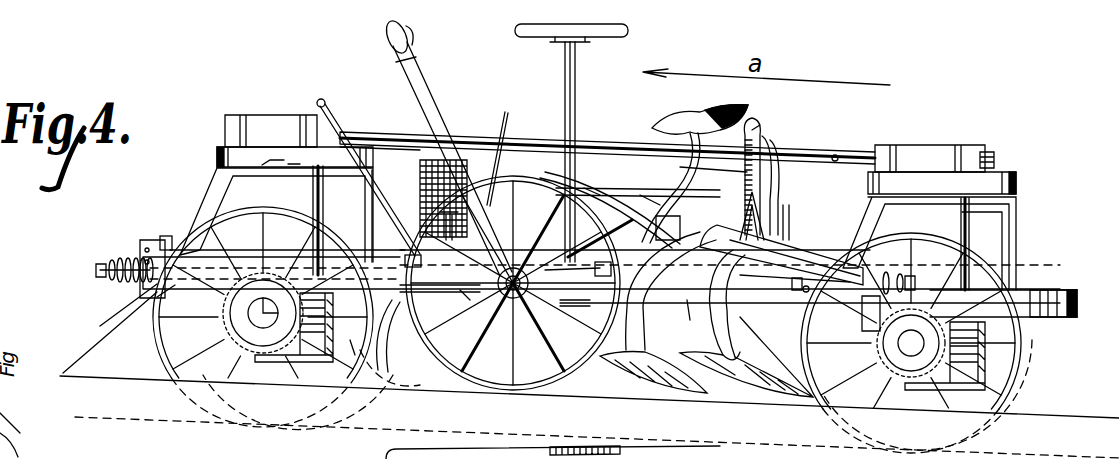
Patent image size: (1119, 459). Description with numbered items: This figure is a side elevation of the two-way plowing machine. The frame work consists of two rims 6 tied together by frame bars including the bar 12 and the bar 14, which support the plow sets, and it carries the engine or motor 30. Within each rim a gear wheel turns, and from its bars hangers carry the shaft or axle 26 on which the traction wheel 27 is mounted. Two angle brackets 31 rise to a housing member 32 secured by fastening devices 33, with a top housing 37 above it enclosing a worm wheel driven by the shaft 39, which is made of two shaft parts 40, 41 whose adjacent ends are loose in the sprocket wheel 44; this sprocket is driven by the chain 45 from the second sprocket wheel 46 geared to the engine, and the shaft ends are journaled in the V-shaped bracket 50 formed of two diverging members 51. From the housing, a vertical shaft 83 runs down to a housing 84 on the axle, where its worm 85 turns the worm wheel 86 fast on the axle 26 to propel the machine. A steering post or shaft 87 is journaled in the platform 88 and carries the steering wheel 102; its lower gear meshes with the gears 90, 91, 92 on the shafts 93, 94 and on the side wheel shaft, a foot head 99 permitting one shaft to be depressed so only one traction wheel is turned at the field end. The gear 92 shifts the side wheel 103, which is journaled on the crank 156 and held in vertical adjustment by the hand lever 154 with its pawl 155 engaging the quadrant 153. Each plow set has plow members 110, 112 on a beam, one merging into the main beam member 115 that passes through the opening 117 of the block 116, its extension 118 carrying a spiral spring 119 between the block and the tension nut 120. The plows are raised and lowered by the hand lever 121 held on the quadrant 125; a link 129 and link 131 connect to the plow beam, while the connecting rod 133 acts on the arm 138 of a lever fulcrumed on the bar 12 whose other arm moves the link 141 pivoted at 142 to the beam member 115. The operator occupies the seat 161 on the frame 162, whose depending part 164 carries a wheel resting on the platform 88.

The rim 6 is at (1068, 318).
The bar 12 is at (247, 262).
The bar 14 is at (935, 314).
The shaft or axle 26 is at (250, 316).
The traction wheel 27 is at (186, 393).
The engine or motor 30 is at (645, 199).
The angle bracket 31 is at (262, 181).
The housing member 32 is at (247, 147).
The fastening devices 33 is at (289, 160).
The top housing 37 is at (262, 117).
The shaft 39 is at (607, 141).
The shaft part 40 is at (413, 137).
The shaft part 41 is at (836, 156).
The sprocket wheel 44 is at (768, 132).
The chain 45 is at (779, 187).
The second sprocket wheel 46 is at (787, 237).
The V-shaped bracket 50 is at (770, 141).
The bracket member 51 is at (754, 218).
The vertical shaft 83 is at (324, 210).
The housing 84 is at (200, 341).
The worm 85 is at (297, 363).
The worm wheel 86 is at (240, 339).
The steering post or shaft 87 is at (577, 67).
The platform 88 is at (650, 236).
The gear 90 is at (610, 277).
The gear 91 is at (518, 312).
The gear 92 is at (560, 281).
The shaft 93 is at (688, 312).
The shaft 94 is at (419, 263).
The head 99 is at (660, 232).
The steering wheel 102 is at (629, 32).
The side wheel 103 is at (530, 395).
The plow member 110 is at (588, 312).
The plow member 112 is at (352, 365).
The main beam member 115 is at (160, 303).
The block 116 is at (160, 245).
The opening 117 is at (809, 291).
The extension 118 is at (108, 262).
The spiral spring 119 is at (128, 250).
The tension nut 120 is at (112, 284).
The hand lever 121 is at (373, 181).
The quadrant 125 is at (416, 232).
The link 129 is at (415, 289).
The link 131 is at (388, 352).
The link or connecting rod 133 is at (272, 248).
The arm 138 is at (172, 242).
The link 141 is at (105, 335).
The pivotal connection 142 is at (112, 315).
The quadrant 153 is at (448, 218).
The hand lever 154 is at (428, 97).
The pawl 155 is at (508, 113).
The crank 156 is at (462, 297).
The seat 161 is at (708, 122).
The frame 162 is at (575, 241).
The depending part 164 is at (678, 228).